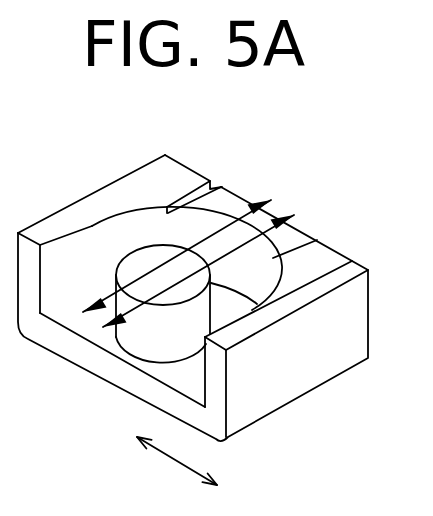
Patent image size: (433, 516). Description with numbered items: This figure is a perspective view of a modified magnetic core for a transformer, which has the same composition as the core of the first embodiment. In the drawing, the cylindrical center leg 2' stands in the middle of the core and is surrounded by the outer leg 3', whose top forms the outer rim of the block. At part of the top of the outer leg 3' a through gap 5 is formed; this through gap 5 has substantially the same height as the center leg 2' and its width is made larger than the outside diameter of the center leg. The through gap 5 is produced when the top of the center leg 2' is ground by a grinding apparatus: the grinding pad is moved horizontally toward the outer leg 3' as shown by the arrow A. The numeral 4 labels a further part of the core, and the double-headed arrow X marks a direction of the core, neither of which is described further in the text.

The center leg 2' is at (136, 328).
The outer leg 3' is at (210, 163).
The channel 4 is at (90, 320).
The through gap 5 is at (300, 234).
The arrow A is at (283, 206).
The direction X is at (178, 463).